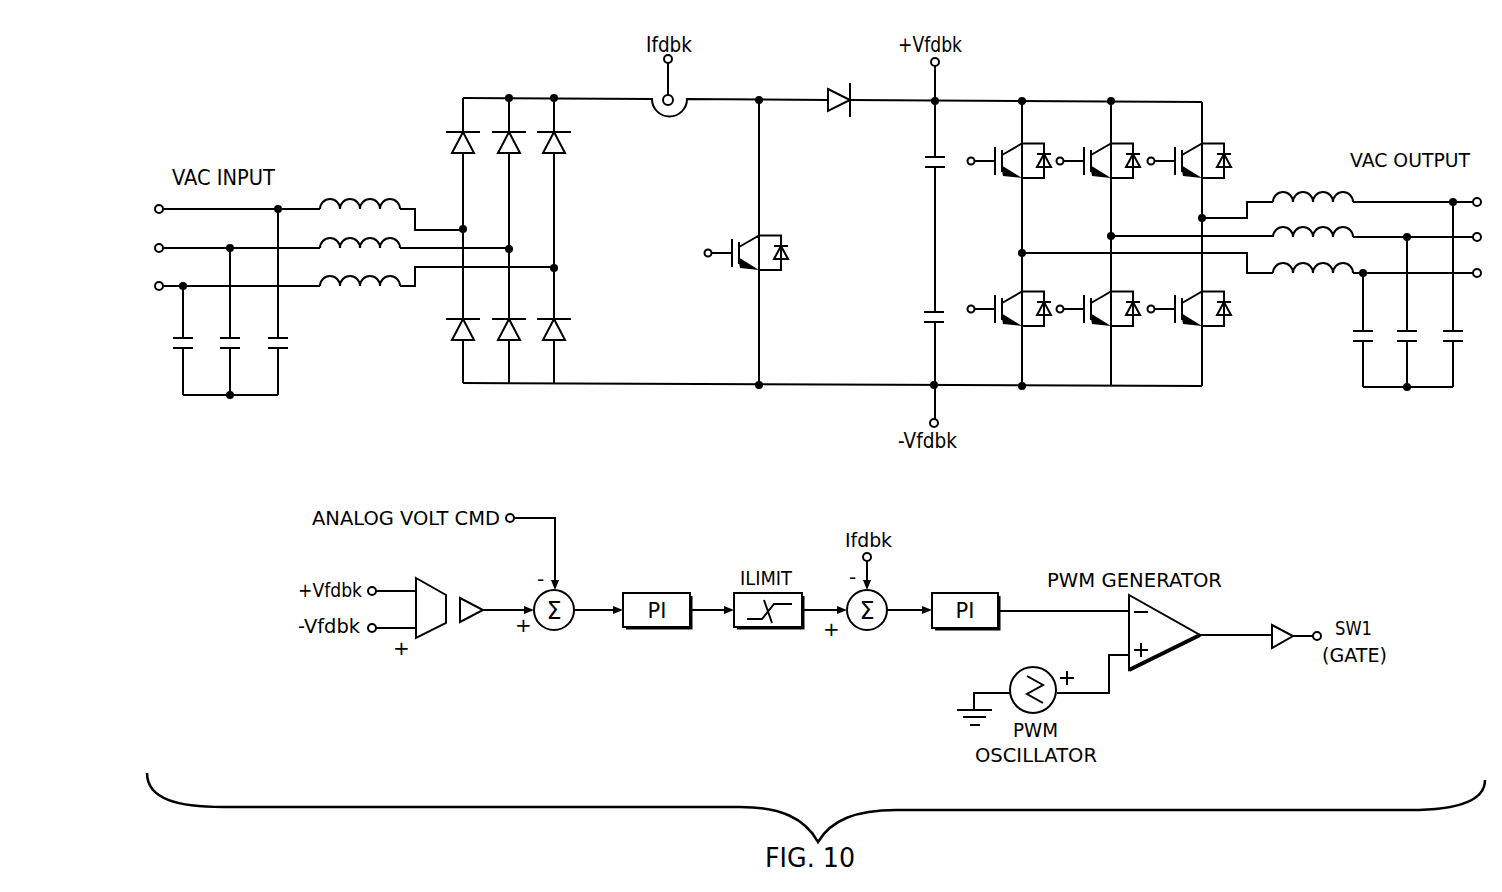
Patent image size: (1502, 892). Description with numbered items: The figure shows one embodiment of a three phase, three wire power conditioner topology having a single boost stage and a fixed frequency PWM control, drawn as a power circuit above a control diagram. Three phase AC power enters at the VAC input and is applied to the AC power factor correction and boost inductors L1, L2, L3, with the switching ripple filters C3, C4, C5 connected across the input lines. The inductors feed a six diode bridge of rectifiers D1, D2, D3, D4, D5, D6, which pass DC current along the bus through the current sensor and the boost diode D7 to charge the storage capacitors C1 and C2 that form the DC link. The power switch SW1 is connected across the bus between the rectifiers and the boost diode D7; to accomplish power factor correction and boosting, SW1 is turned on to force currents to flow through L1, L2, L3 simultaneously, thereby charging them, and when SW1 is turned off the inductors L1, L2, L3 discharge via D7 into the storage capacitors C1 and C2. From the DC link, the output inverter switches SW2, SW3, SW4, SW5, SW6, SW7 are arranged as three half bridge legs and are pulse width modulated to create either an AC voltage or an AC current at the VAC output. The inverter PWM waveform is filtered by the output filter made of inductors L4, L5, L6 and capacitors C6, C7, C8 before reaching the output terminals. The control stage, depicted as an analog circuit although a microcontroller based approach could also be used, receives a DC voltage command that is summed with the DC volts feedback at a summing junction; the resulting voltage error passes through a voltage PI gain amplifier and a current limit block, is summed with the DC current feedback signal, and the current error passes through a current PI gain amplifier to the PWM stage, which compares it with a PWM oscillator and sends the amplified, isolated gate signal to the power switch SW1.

The AC PF correction/boost inductor L1 is at (363, 192).
The AC PF correction/boost inductor L2 is at (363, 231).
The AC PF correction/boost inductor L3 is at (363, 269).
The switching ripple filter C3 is at (173, 363).
The switching ripple filter C4 is at (219, 363).
The switching ripple filter C5 is at (265, 363).
The rectifier D1 is at (456, 129).
The rectifier D2 is at (456, 347).
The rectifier D3 is at (501, 129).
The rectifier D4 is at (501, 347).
The rectifier D5 is at (545, 129).
The rectifier D6 is at (545, 347).
The boost diode D7 is at (838, 116).
The power switch SW1 is at (745, 270).
The storage capacitor C1 is at (922, 176).
The storage capacitor C2 is at (921, 331).
The output inverter switch SW2 is at (1010, 178).
The output inverter switch SW3 is at (1010, 329).
The output inverter switch SW4 is at (1099, 178).
The output inverter switch SW5 is at (1099, 329).
The output inverter switch SW6 is at (1190, 178).
The output inverter switch SW7 is at (1190, 329).
The output filter inductor L4 is at (1324, 191).
The output filter inductor L5 is at (1324, 229).
The output filter inductor L6 is at (1324, 262).
The output filter capacitor C6 is at (1351, 352).
The output filter capacitor C7 is at (1396, 352).
The output filter capacitor C8 is at (1442, 352).